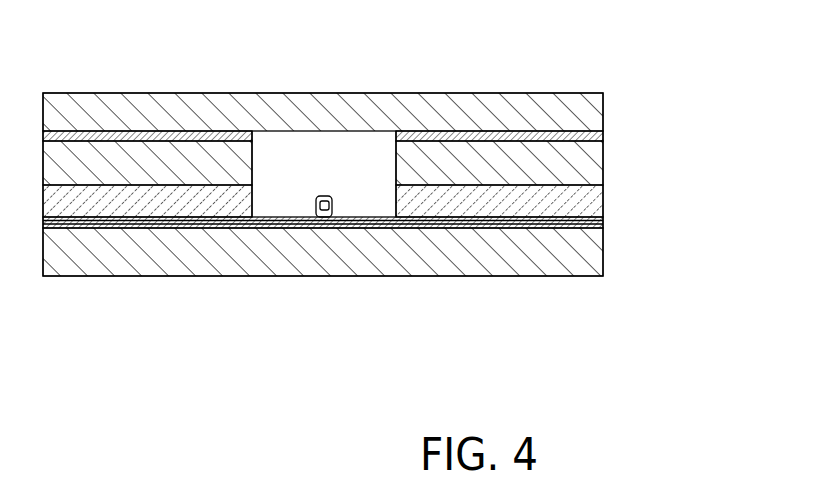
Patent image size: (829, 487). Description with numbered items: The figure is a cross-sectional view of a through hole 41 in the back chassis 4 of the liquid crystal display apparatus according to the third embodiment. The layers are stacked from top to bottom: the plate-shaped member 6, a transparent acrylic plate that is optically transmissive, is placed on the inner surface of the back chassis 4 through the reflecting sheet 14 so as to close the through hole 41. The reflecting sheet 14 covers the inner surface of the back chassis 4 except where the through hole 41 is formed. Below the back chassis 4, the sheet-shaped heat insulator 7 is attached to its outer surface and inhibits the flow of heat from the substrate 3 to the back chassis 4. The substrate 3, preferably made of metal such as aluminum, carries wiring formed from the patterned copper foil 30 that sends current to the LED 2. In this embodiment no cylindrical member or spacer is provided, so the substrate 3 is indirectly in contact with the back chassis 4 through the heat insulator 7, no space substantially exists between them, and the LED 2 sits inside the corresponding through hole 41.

The LED 2 is at (323, 265).
The substrate 3 is at (516, 273).
The back chassis 4 is at (603, 170).
The plate-shaped member 6 is at (215, 93).
The heat insulator 7 is at (603, 207).
The reflecting sheet 14 is at (603, 135).
The patterned copper foil 30 is at (603, 222).
The through hole 41 is at (396, 142).